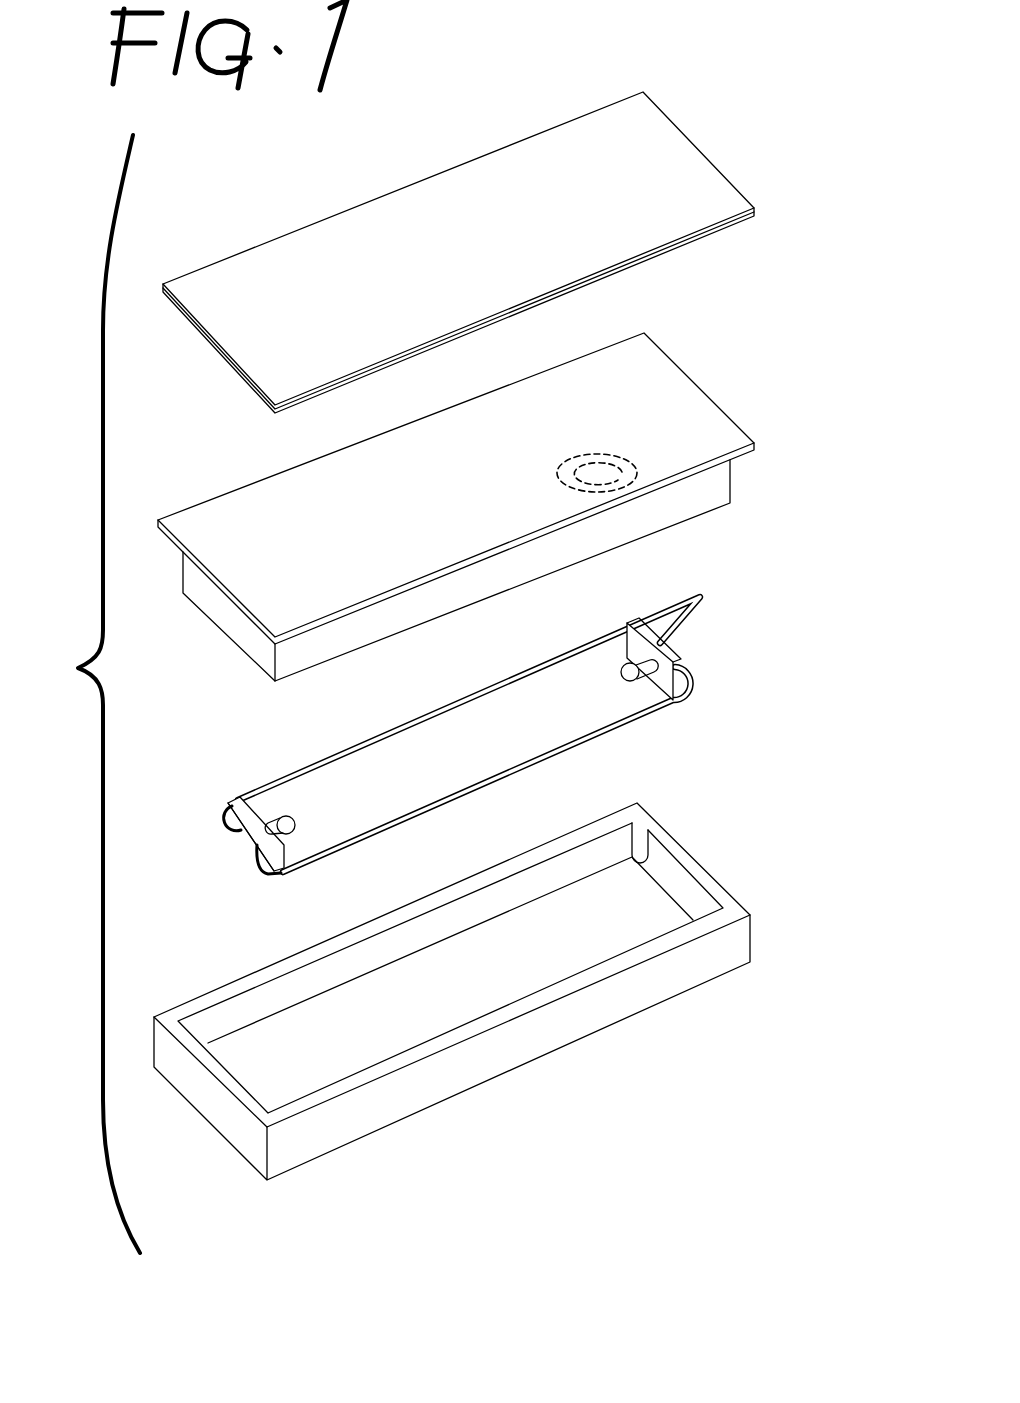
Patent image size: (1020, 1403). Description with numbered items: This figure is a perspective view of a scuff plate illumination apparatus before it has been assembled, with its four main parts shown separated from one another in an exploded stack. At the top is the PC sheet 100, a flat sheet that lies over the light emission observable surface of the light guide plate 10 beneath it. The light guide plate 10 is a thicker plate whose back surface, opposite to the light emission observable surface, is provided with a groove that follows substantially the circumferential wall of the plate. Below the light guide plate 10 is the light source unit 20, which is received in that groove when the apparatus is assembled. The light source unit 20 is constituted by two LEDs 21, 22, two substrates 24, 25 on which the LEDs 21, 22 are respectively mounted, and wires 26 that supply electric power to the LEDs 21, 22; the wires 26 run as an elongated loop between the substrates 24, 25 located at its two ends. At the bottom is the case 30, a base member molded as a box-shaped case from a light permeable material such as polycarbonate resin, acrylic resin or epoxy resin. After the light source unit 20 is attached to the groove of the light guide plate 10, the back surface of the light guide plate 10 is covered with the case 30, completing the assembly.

The PC sheet 100 is at (713, 128).
The light guide plate 10 is at (725, 388).
The light source unit 20 is at (493, 722).
The LED 21 is at (297, 822).
The LED 22 is at (623, 677).
The substrate 24 is at (218, 807).
The substrate 25 is at (677, 658).
The wires 26 is at (443, 710).
The case 30 is at (712, 818).